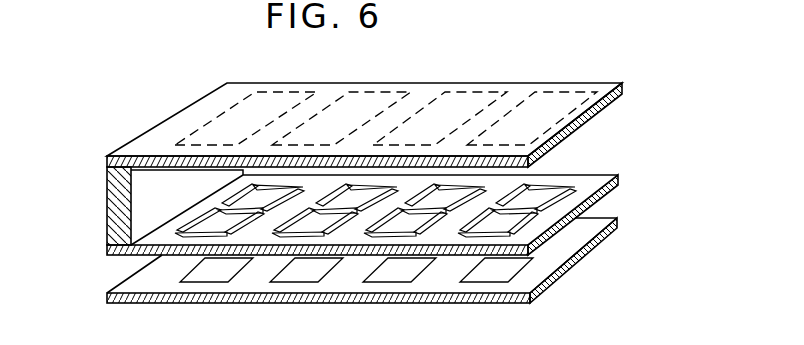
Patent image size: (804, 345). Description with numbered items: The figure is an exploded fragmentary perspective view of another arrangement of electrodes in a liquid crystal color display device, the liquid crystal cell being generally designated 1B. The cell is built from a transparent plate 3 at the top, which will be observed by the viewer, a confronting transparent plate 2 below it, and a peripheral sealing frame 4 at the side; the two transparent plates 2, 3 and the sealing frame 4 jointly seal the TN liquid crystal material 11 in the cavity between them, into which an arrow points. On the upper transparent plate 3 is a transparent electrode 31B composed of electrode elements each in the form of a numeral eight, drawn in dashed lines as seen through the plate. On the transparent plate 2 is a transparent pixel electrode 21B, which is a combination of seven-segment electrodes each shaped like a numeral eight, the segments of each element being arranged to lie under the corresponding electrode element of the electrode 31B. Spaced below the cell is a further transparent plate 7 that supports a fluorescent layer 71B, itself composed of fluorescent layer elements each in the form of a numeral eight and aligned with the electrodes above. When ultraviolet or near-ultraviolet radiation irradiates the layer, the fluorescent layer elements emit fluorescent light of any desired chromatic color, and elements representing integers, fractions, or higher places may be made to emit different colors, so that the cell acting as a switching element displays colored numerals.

The liquid crystal cell 1B is at (135, 109).
The transparent plate 3 is at (190, 113).
The transparent electrode 31B is at (245, 102).
The peripheral sealing frame 4 is at (117, 206).
The TN liquid crystal material 11 is at (150, 207).
The transparent plate 2 is at (607, 173).
The transparent pixel electrode 21B is at (565, 190).
The transparent plate 7 is at (557, 260).
The fluorescent layer 71B is at (493, 276).